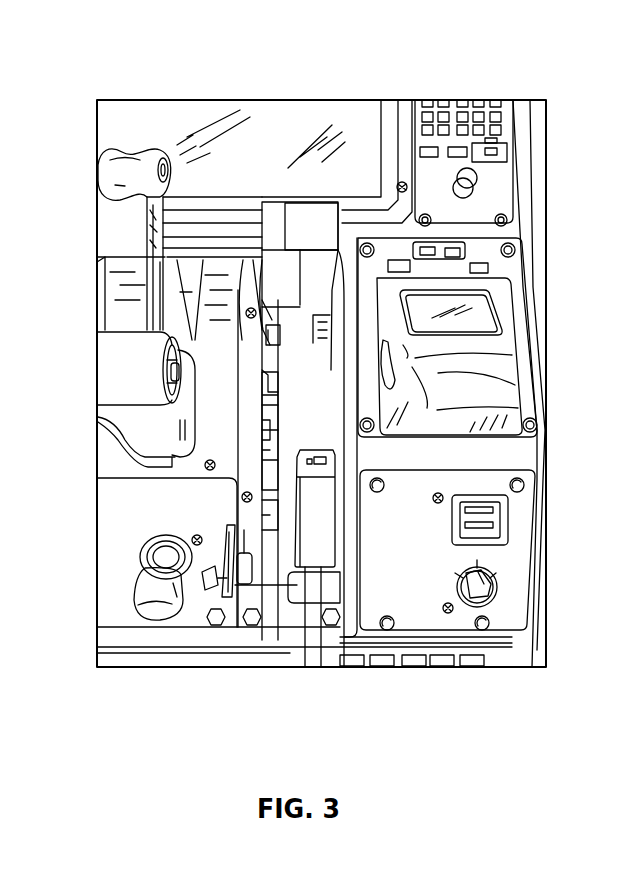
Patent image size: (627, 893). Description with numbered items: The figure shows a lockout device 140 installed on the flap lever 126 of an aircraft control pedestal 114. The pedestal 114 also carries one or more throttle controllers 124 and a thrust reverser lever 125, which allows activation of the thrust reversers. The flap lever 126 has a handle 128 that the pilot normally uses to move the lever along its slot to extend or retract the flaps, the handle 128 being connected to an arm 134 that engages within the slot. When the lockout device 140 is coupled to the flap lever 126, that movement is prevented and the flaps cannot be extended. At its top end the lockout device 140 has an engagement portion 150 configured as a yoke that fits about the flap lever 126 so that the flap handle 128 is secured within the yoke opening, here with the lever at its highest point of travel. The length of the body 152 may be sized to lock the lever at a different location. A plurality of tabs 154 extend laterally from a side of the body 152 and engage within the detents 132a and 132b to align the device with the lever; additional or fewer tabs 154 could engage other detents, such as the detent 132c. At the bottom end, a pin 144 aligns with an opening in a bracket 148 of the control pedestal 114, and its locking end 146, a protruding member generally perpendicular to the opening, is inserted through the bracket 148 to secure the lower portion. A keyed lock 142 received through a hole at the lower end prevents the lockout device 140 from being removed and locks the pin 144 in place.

The control pedestal 114 is at (402, 728).
The throttle controller 124 is at (112, 371).
The thrust reverser lever 125 is at (100, 172).
The flap lever 126 is at (296, 199).
The handle 128 is at (305, 203).
The detent 132a is at (252, 352).
The detent 132b is at (228, 530).
The detent 132c is at (252, 419).
The arm 134 is at (0, 352).
The lockout device 140 is at (310, 398).
The lock 142 is at (323, 525).
The pin 144 is at (248, 592).
The locking end 146 is at (202, 590).
The bracket 148 is at (237, 587).
The engagement portion 150 is at (350, 239).
The body 152 is at (300, 307).
The tabs 154 is at (254, 353).